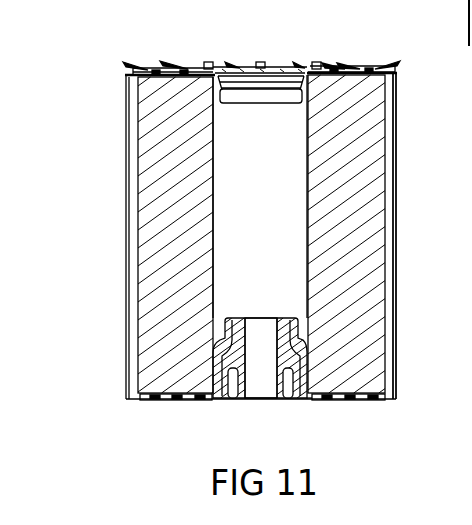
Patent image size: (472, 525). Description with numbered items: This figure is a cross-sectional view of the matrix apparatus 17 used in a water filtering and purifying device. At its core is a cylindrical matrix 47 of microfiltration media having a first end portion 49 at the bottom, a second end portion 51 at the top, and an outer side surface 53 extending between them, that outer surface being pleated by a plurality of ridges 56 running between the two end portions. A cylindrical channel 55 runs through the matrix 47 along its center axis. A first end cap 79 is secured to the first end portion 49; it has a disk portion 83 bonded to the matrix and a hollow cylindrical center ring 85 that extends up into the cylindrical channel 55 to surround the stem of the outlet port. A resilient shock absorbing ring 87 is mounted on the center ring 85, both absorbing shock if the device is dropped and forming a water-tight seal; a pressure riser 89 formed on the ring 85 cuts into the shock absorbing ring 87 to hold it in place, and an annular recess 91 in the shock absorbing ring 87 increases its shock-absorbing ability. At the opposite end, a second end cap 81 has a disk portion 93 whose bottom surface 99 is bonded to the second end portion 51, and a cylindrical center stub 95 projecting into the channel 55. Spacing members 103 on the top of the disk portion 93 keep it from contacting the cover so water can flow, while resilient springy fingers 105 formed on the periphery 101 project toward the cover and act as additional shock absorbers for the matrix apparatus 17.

The matrix apparatus 17 is at (112, 216).
The matrix 47 is at (365, 208).
The first end portion 49 is at (348, 397).
The second end portion 51 is at (342, 73).
The outer side surface 53 is at (390, 152).
The cylindrical channel 55 is at (272, 182).
The ridges 56 is at (390, 264).
The first end cap 79 is at (180, 400).
The second end cap 81 is at (175, 78).
The disk portion 83 is at (323, 400).
The hollow cylindrical center ring 85 is at (304, 363).
The resilient shock absorbing ring 87 is at (232, 352).
The pressure riser 89 is at (232, 348).
The annular recess 91 is at (230, 400).
The disk portion 93 is at (337, 73).
The cylindrical center stub 95 is at (280, 90).
The bottom surface 99 is at (160, 85).
The periphery 101 is at (143, 70).
The spacing members 103 is at (208, 60).
The resilient springy fingers 105 is at (173, 67).